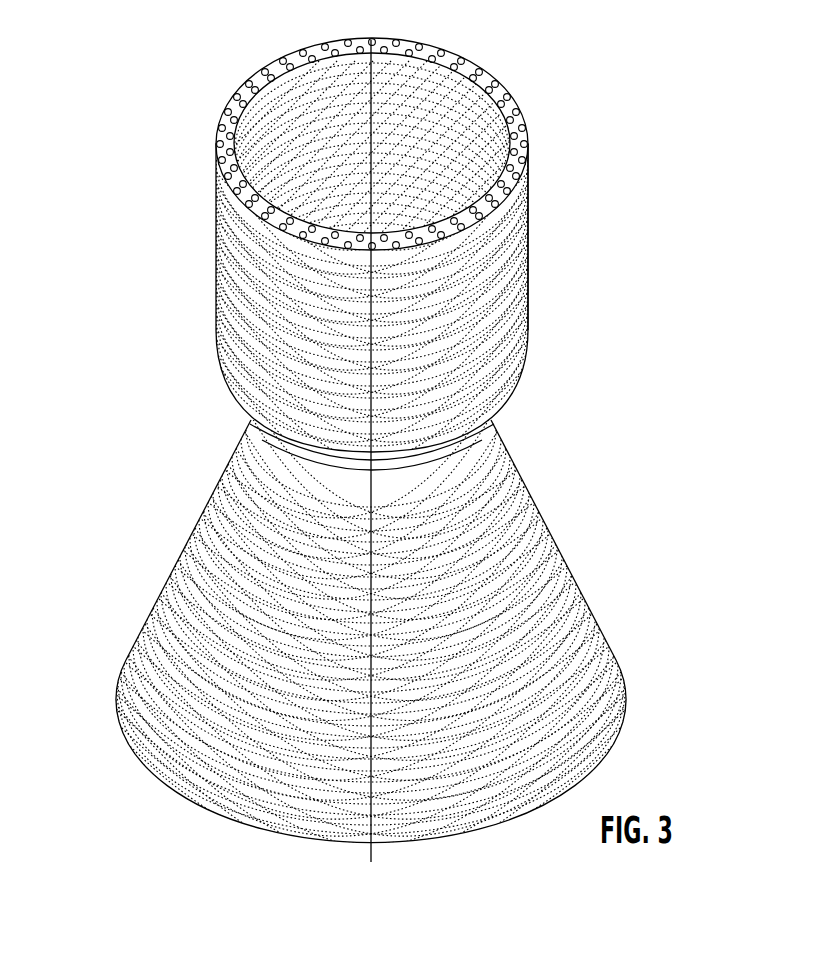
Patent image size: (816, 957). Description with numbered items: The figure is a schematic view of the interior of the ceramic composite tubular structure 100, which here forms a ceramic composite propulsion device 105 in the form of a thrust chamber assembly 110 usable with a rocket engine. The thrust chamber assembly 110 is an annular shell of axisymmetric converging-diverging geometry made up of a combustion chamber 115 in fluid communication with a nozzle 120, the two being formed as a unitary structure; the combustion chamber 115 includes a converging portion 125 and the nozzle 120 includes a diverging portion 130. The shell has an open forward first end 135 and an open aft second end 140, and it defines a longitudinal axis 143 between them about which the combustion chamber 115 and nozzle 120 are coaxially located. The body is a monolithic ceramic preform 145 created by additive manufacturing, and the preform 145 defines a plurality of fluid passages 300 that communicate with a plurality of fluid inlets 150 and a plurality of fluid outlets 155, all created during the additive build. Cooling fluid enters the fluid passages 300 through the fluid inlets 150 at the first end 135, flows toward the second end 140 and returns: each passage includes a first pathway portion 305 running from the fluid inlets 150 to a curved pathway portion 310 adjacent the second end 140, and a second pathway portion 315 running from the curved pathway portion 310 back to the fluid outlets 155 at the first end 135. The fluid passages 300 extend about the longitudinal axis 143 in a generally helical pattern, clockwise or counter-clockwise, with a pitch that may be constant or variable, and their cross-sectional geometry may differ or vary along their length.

The ceramic composite tubular structure 100 is at (657, 123).
The ceramic composite propulsion device 105 is at (222, 402).
The thrust chamber assembly 110 is at (688, 245).
The combustion chamber 115 is at (560, 288).
The nozzle 120 is at (622, 475).
The converging portion 125 is at (530, 385).
The diverging portion 130 is at (593, 597).
The first end 135 is at (214, 44).
The second end 140 is at (158, 800).
The longitudinal axis 143 is at (370, 858).
The monolithic ceramic preform 145 is at (478, 62).
The fluid inlets 150 is at (385, 45).
The fluid outlets 155 is at (293, 63).
The fluid passages 300 is at (283, 110).
The first pathway portion 305 is at (340, 354).
The curved pathway portion 310 is at (371, 638).
The second pathway portion 315 is at (492, 382).